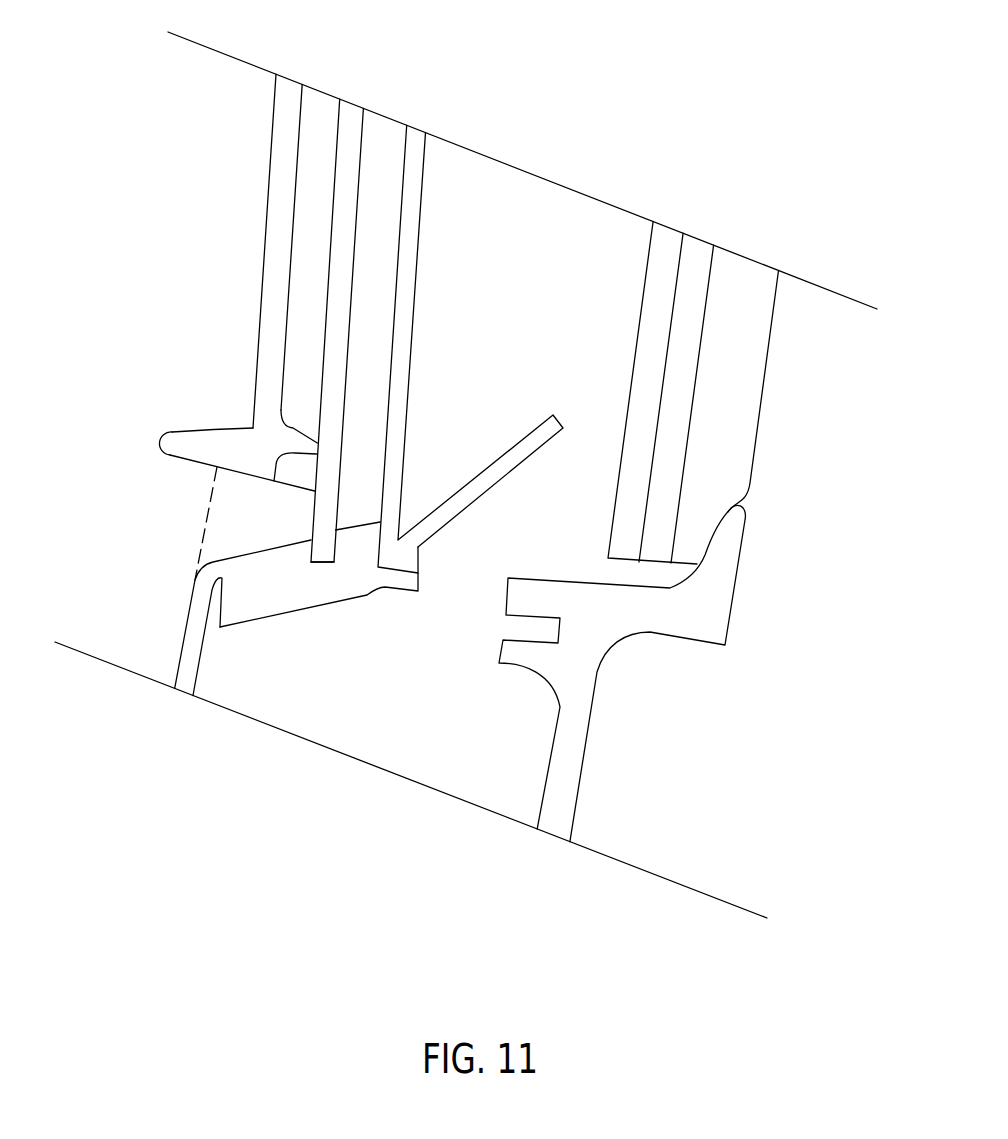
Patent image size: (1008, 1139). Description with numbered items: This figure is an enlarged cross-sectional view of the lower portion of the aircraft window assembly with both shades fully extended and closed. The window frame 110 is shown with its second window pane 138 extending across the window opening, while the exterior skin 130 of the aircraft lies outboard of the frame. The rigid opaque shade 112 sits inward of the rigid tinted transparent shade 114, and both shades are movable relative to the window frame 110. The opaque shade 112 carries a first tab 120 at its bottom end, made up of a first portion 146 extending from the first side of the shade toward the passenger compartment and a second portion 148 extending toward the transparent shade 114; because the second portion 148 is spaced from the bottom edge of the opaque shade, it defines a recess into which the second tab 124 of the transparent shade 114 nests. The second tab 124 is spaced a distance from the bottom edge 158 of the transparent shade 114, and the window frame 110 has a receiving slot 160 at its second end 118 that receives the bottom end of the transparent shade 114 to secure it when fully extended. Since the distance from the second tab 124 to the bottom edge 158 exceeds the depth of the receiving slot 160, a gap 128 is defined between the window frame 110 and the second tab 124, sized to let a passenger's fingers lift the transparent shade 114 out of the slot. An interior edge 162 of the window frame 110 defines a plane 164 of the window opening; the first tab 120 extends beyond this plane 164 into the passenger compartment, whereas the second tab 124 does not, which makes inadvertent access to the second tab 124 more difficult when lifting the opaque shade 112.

The window frame 110 is at (198, 665).
The opaque shade 112 is at (288, 85).
The transparent shade 114 is at (349, 108).
The second end 118 is at (342, 668).
The first tab 120 is at (152, 432).
The second tab 124 is at (293, 492).
The gap 128 is at (182, 498).
The exterior skin 130 is at (586, 755).
The second window pane 138 is at (416, 293).
The first portion 146 is at (167, 431).
The second portion 148 is at (294, 428).
The bottom edge 158 is at (322, 563).
The receiving slot 160 is at (350, 573).
The interior edge 162 is at (184, 635).
The plane 164 is at (203, 540).